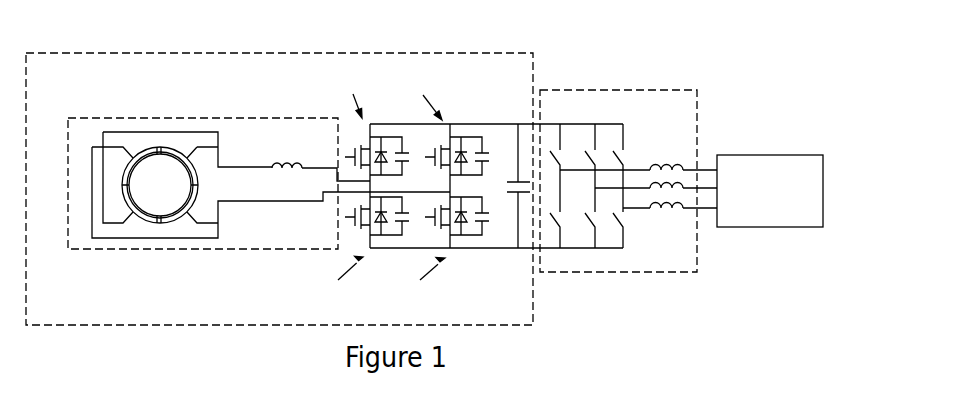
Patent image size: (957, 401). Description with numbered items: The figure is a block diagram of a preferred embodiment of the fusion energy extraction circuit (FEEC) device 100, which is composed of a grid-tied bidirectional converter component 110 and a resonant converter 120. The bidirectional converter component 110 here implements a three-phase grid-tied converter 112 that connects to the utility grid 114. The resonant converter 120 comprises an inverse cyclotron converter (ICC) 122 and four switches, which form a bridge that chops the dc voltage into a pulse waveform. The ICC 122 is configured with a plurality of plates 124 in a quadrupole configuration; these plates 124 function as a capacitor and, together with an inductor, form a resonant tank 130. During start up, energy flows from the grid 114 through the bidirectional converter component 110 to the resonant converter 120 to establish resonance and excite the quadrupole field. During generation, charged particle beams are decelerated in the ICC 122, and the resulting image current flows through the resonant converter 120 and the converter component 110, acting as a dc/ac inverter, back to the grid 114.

The fusion energy extraction circuit device 100 is at (618, 55).
The grid-tied bidirectional converter component 110 is at (590, 272).
The three-phase grid-tied converter 112 is at (646, 136).
The utility grid 114 is at (760, 228).
The resonant converter 120 is at (157, 327).
The inverse cyclotron converter 122 is at (90, 130).
The plates 124 is at (160, 146).
The resonant tank 130 is at (228, 251).